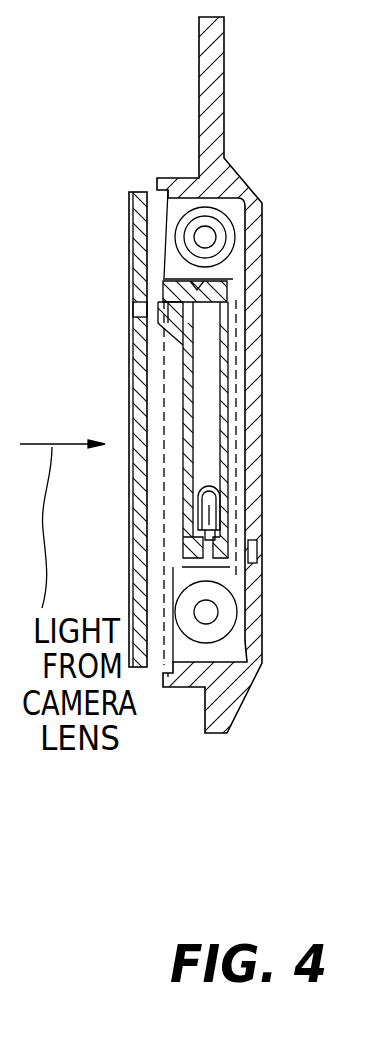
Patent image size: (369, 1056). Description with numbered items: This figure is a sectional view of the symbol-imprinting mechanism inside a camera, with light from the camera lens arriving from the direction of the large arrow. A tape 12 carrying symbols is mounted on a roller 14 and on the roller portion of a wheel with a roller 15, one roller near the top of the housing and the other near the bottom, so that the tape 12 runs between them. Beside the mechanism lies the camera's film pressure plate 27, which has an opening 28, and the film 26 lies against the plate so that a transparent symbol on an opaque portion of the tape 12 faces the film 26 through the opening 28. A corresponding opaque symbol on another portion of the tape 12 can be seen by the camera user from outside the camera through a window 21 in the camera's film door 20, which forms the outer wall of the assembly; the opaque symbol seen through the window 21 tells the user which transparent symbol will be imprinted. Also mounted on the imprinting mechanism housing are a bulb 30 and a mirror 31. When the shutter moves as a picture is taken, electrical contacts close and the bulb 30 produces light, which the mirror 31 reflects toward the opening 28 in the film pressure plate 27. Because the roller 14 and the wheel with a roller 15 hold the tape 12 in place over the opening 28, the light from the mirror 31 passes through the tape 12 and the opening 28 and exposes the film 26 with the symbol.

The tape 12 is at (163, 395).
The roller 14 is at (220, 230).
The wheel with a roller 15 is at (232, 618).
The film door 20 is at (240, 687).
The window 21 is at (260, 556).
The film 26 is at (128, 242).
The film pressure plate 27 is at (131, 192).
The opening 28 is at (133, 310).
The bulb 30 is at (215, 498).
The mirror 31 is at (222, 304).